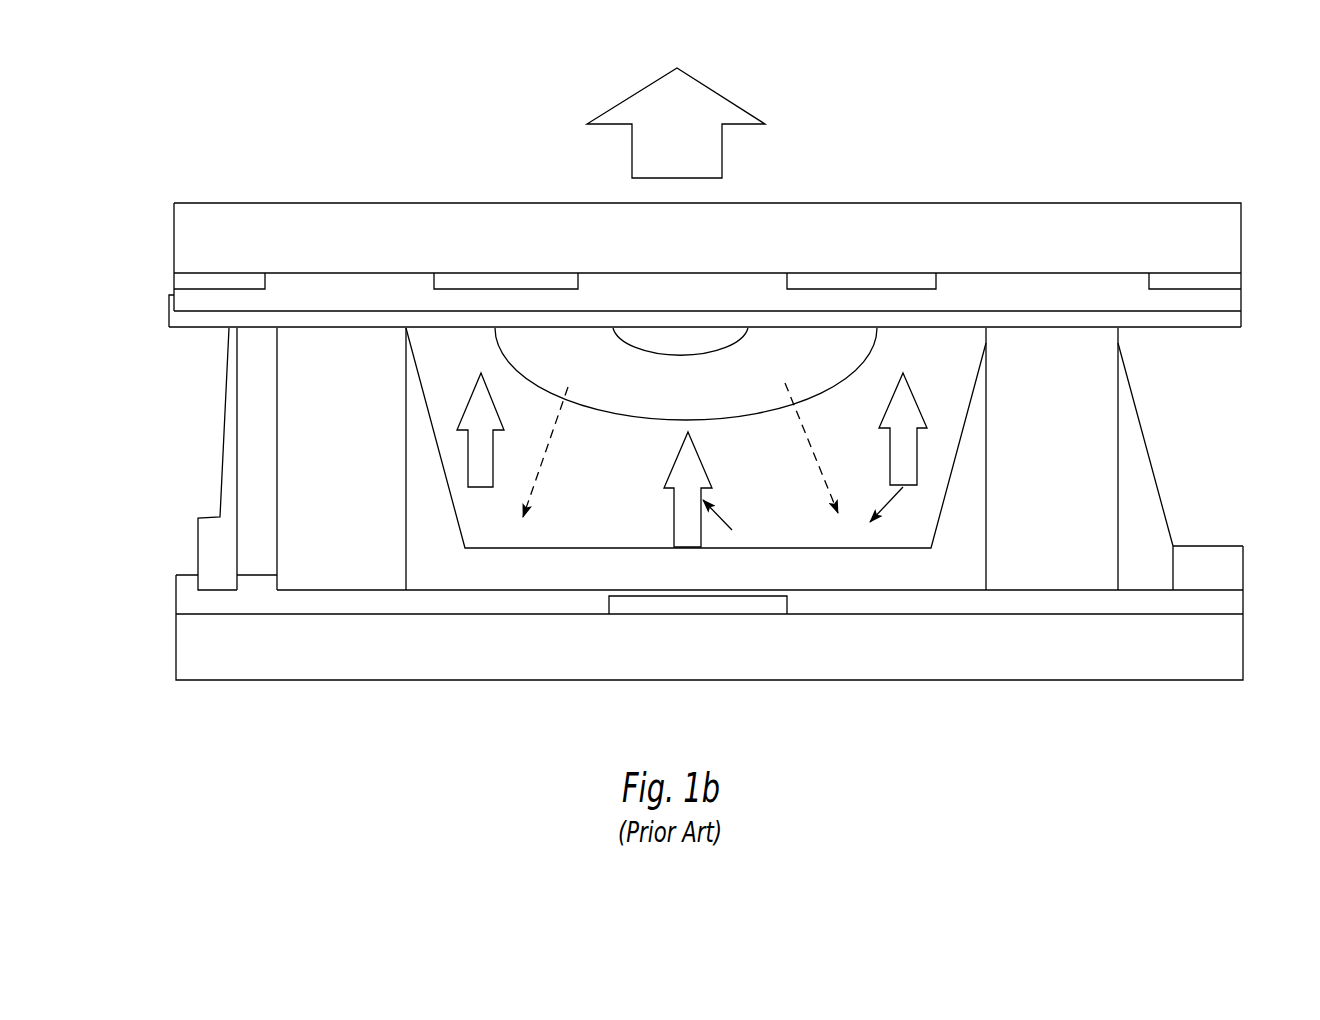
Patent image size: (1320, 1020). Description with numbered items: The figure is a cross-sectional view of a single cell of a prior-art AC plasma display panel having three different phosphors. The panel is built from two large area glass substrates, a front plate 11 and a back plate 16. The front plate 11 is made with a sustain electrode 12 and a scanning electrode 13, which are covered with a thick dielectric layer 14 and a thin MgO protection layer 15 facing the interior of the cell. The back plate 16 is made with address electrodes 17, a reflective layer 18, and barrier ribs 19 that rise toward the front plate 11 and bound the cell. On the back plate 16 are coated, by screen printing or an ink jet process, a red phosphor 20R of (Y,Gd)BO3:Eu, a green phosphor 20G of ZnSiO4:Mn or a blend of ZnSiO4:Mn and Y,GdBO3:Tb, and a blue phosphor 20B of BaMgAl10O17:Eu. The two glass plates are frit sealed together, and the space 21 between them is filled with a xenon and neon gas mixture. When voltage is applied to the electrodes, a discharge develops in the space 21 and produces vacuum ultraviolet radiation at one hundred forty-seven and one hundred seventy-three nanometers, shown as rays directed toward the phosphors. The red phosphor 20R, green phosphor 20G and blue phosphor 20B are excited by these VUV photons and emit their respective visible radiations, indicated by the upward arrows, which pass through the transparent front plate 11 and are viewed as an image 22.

The front plate 11 is at (1222, 222).
The sustain electrode 12 is at (502, 252).
The scanning electrode 13 is at (877, 257).
The dielectric layer 14 is at (193, 303).
The protection layer 15 is at (1235, 318).
The back plate 16 is at (1053, 657).
The address electrodes 17 is at (713, 608).
The reflective layer 18 is at (193, 607).
The barrier ribs 19 is at (1085, 510).
The red phosphor 20R is at (253, 543).
The green phosphor 20G is at (482, 573).
The blue phosphor 20B is at (1150, 558).
The space 21 is at (692, 437).
The image 22 is at (676, 119).